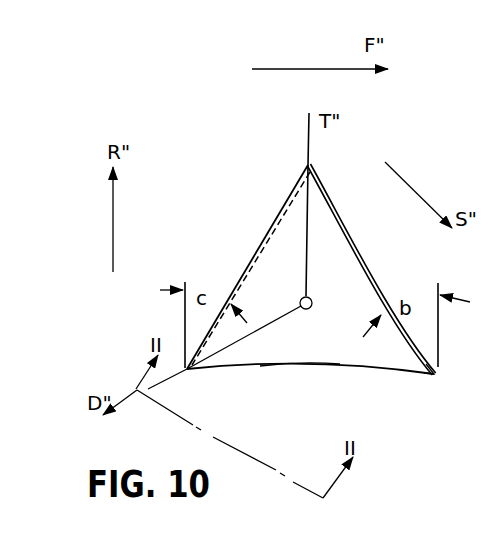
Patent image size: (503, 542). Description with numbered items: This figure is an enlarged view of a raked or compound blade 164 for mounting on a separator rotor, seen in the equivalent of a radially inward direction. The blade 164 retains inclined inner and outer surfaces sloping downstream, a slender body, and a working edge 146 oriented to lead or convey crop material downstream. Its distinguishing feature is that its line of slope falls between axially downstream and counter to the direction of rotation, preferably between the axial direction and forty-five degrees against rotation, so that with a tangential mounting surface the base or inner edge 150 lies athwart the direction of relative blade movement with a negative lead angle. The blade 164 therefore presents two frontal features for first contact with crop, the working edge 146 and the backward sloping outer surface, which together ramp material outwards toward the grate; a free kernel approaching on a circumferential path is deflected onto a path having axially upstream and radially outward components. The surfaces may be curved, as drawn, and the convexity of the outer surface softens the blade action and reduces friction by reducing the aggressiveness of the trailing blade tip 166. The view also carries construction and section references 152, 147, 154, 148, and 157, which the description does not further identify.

The raked blade 164 is at (206, 106).
The inner edge 150 is at (253, 210).
The luff edge 152 is at (302, 178).
The leech spar 147 is at (333, 208).
The working edge 146 is at (386, 248).
The tack reference line 154 is at (200, 342).
The clew reference line 148 is at (410, 348).
The foot 157 is at (240, 368).
The trailing blade tip 166 is at (433, 377).